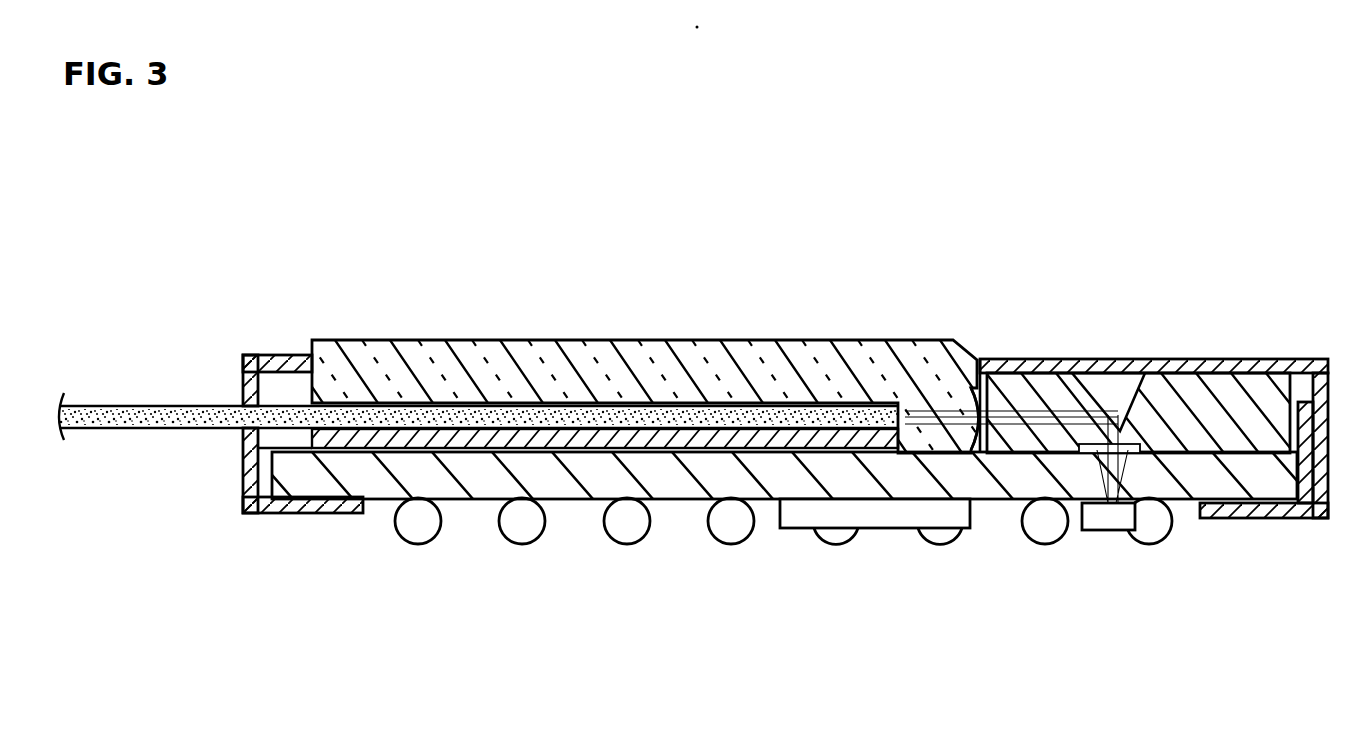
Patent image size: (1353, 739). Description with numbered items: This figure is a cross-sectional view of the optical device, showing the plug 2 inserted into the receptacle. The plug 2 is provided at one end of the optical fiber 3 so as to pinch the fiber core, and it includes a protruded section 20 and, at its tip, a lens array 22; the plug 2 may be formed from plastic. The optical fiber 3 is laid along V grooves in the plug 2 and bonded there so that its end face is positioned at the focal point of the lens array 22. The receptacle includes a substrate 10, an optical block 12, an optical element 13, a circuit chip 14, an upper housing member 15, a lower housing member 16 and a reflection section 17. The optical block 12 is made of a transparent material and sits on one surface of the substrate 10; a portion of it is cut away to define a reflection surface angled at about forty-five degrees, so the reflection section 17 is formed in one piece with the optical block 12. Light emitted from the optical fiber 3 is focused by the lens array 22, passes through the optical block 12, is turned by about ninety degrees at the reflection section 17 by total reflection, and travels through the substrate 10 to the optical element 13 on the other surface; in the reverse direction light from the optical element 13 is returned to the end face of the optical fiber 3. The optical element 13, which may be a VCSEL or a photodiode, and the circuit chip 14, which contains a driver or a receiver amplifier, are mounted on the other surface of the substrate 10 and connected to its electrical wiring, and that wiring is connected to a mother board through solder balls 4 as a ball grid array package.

The plug 2 is at (648, 353).
The protruded section 20 is at (744, 350).
The optical fiber 3 is at (143, 403).
The solder balls 4 is at (420, 523).
The substrate 10 is at (483, 483).
The optical block 12 is at (1222, 358).
The optical element 13 is at (1110, 517).
The circuit chip 14 is at (878, 518).
The upper housing member 15 is at (1295, 358).
The lower housing member 16 is at (1257, 518).
The reflection section 17 is at (1095, 358).
The lens array 22 is at (980, 359).